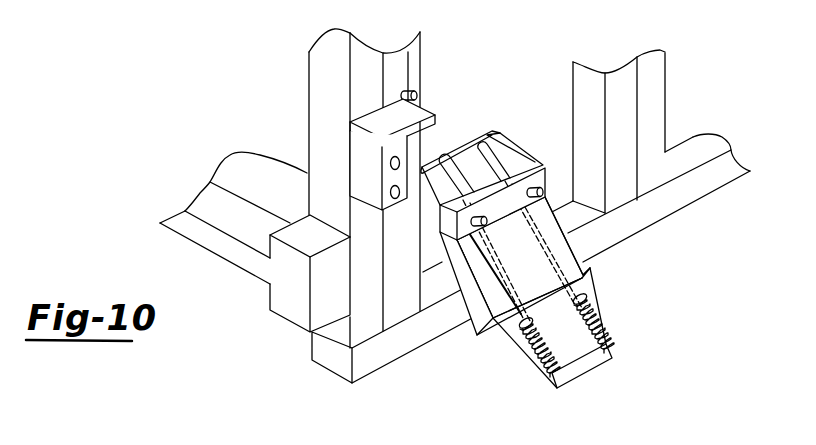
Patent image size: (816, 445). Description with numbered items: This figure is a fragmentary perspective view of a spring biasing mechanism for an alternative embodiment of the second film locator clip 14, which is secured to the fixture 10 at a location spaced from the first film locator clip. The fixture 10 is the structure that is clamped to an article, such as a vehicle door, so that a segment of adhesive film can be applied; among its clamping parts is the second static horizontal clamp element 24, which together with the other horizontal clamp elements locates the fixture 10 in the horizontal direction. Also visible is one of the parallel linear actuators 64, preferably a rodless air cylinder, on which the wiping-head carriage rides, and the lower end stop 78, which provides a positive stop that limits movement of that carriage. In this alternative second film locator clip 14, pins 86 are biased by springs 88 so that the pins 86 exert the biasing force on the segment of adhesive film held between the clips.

The fixture 10 is at (670, 202).
The second film locator clip 14 is at (539, 240).
The second static horizontal clamp element 24 is at (258, 268).
The linear actuator 64 is at (402, 59).
The lower end stop 78 is at (360, 160).
The pins 86 is at (471, 163).
The springs 88 is at (620, 315).